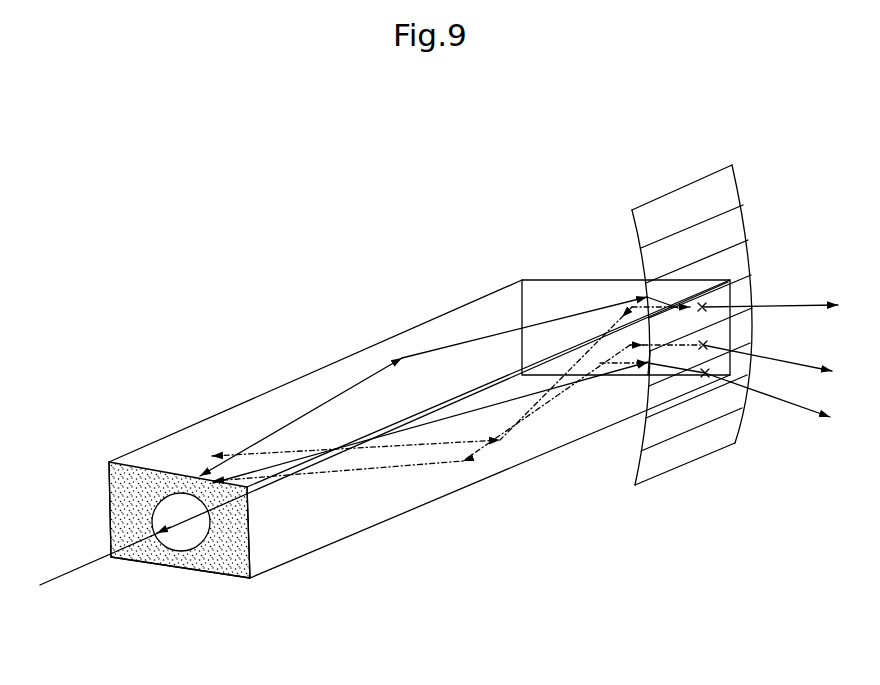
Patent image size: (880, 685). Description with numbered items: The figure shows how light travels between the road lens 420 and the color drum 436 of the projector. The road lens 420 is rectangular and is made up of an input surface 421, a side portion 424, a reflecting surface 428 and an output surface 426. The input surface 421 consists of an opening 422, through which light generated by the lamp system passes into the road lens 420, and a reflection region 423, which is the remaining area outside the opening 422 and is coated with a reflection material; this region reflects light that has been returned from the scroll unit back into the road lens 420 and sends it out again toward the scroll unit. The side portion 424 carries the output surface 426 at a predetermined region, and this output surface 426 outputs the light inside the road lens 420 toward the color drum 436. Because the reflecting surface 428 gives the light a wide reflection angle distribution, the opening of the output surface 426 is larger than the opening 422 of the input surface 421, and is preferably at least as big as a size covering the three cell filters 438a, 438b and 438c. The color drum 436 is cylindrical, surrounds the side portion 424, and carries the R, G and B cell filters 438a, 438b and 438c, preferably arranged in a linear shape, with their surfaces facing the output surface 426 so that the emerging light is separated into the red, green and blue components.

The road lens 420 is at (253, 380).
The input surface 421 is at (130, 502).
The opening 422 is at (183, 538).
The reflection region 423 is at (236, 560).
The side portion 424 is at (378, 342).
The output surface 426 is at (650, 376).
The reflecting surface 428 is at (553, 279).
The color drum 436 is at (626, 250).
The R cell filter 438a is at (752, 288).
The G cell filter 438b is at (752, 323).
The B cell filter 438c is at (750, 363).